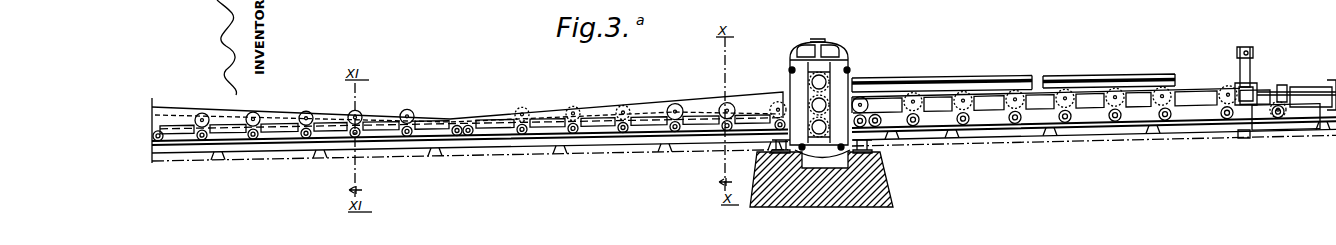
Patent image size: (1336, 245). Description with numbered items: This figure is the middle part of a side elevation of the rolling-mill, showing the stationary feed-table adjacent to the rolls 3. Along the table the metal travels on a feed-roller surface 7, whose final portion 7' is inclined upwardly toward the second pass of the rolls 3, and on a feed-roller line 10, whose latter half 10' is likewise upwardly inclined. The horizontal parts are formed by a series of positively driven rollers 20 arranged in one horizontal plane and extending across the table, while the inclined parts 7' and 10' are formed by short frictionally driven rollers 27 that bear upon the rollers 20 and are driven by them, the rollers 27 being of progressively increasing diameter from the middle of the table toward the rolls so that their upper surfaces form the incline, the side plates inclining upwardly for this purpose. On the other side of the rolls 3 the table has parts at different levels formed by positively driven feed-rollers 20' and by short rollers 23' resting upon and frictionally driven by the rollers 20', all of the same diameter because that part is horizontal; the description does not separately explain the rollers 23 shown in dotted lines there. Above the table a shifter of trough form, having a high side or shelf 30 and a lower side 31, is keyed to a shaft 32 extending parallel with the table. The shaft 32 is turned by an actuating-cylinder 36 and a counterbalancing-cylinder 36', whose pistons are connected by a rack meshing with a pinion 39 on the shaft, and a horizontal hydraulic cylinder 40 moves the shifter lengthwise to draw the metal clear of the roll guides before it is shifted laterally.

The rolls 3 is at (832, 121).
The feed-roller surface 7 is at (470, 150).
The inclined portion of feed-roller surface 7' is at (467, 103).
The feed-roller line 10 is at (470, 150).
The inclined half of feed-roller line 10' is at (467, 104).
The rollers 20 is at (469, 152).
The positively-driven feed-rollers 20' is at (1069, 135).
The upper rollers of second conveyor 23 is at (1095, 123).
The short rollers 23' is at (942, 75).
The frictionally-driven rollers 27 is at (202, 114).
The side or shelf of shifter 30 is at (1072, 80).
The other side of shifter 31 is at (1118, 84).
The shaft 32 is at (873, 100).
The actuating-cylinder 36 is at (1230, 67).
The counterbalancing-cylinder 36' is at (1253, 146).
The pinion 39 is at (1250, 87).
The hydraulic cylinder 40 is at (1305, 88).